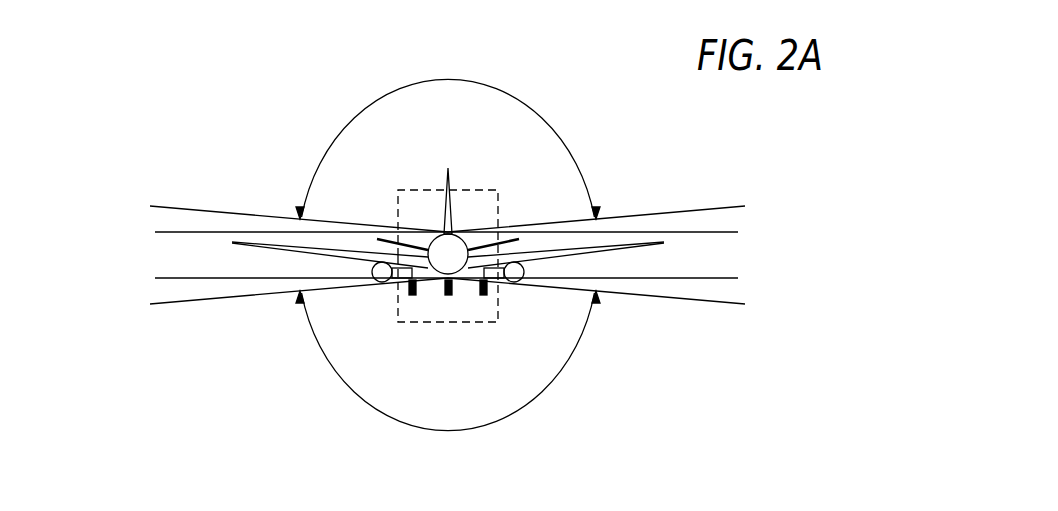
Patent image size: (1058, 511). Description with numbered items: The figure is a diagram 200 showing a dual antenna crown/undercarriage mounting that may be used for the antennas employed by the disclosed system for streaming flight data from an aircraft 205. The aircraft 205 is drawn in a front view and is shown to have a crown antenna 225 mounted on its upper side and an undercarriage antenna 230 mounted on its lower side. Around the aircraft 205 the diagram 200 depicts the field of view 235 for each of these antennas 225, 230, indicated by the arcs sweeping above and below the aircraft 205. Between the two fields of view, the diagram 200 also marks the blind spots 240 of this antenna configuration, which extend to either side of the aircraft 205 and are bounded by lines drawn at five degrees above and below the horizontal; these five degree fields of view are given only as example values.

The diagram 200 is at (200, 117).
The aircraft 205 is at (470, 251).
The crown antenna 225 is at (418, 190).
The undercarriage antenna 230 is at (463, 322).
The field of view 235 is at (357, 98).
The blind spots 240 is at (120, 260).